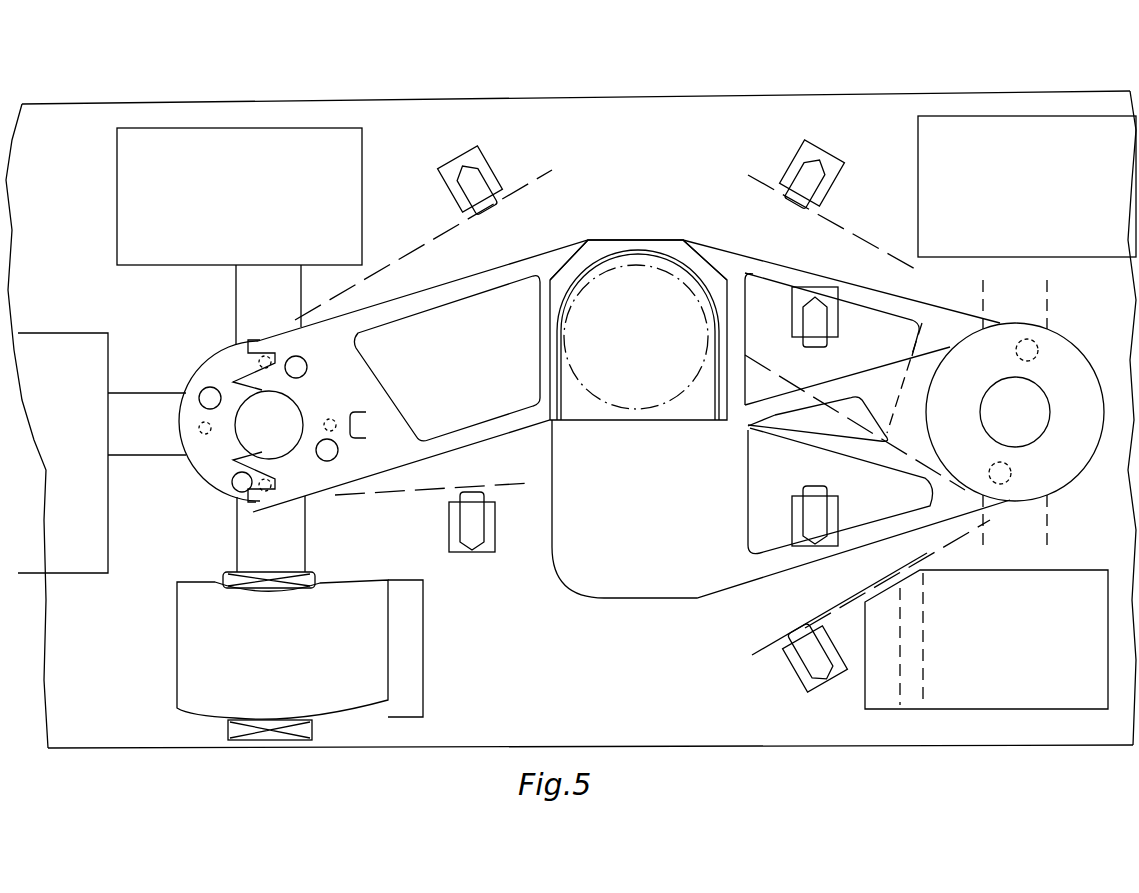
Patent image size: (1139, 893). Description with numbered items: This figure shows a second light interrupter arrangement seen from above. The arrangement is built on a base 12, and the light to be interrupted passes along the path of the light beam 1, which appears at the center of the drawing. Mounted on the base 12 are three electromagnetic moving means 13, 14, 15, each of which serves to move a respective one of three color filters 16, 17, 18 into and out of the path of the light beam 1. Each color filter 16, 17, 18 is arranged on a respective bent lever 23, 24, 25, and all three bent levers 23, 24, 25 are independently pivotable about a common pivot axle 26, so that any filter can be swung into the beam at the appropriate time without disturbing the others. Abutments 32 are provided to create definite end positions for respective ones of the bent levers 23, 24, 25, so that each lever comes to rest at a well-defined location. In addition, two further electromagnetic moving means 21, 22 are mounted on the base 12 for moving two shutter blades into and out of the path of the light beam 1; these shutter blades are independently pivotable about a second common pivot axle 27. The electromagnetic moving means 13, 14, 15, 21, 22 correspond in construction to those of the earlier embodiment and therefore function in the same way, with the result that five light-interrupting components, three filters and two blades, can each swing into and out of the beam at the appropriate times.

The light beam 1 is at (604, 402).
The base 12 is at (878, 106).
The electromagnetic moving means 13 is at (187, 138).
The electromagnetic moving means 14 is at (90, 352).
The electromagnetic moving means 15 is at (190, 618).
The color filter 16 is at (618, 259).
The color filter 17 is at (648, 259).
The color filter 18 is at (686, 273).
The electromagnetic moving means 21 is at (1058, 578).
The electromagnetic moving means 22 is at (1072, 243).
The bent lever 23 is at (368, 478).
The bent lever 24 is at (168, 402).
The bent lever 25 is at (256, 306).
The pivot axle 26 is at (248, 437).
The pivot axle 27 is at (1036, 400).
The abutment 32 is at (480, 184).